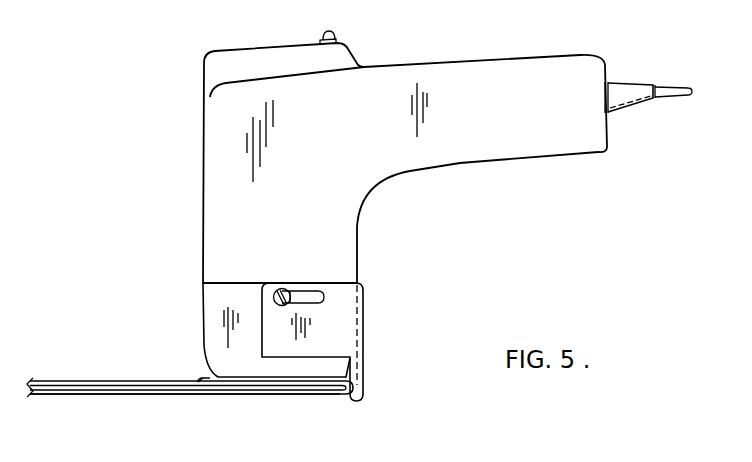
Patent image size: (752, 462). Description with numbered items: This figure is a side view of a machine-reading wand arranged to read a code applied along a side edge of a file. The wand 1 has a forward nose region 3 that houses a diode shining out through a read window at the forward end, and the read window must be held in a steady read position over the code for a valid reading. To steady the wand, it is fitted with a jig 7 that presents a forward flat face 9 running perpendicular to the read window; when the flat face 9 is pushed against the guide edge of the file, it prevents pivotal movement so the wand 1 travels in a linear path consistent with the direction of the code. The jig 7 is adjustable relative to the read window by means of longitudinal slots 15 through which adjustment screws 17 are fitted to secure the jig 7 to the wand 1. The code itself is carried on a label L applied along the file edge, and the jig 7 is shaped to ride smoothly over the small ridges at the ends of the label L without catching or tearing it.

The wand 1 is at (528, 73).
The forward nose region 3 is at (210, 318).
The jig 7 is at (364, 366).
The forward flat face 9 is at (362, 388).
The longitudinal slots 15 is at (311, 291).
The adjustment screws 17 is at (281, 289).
The label L is at (200, 380).
The film F is at (130, 394).